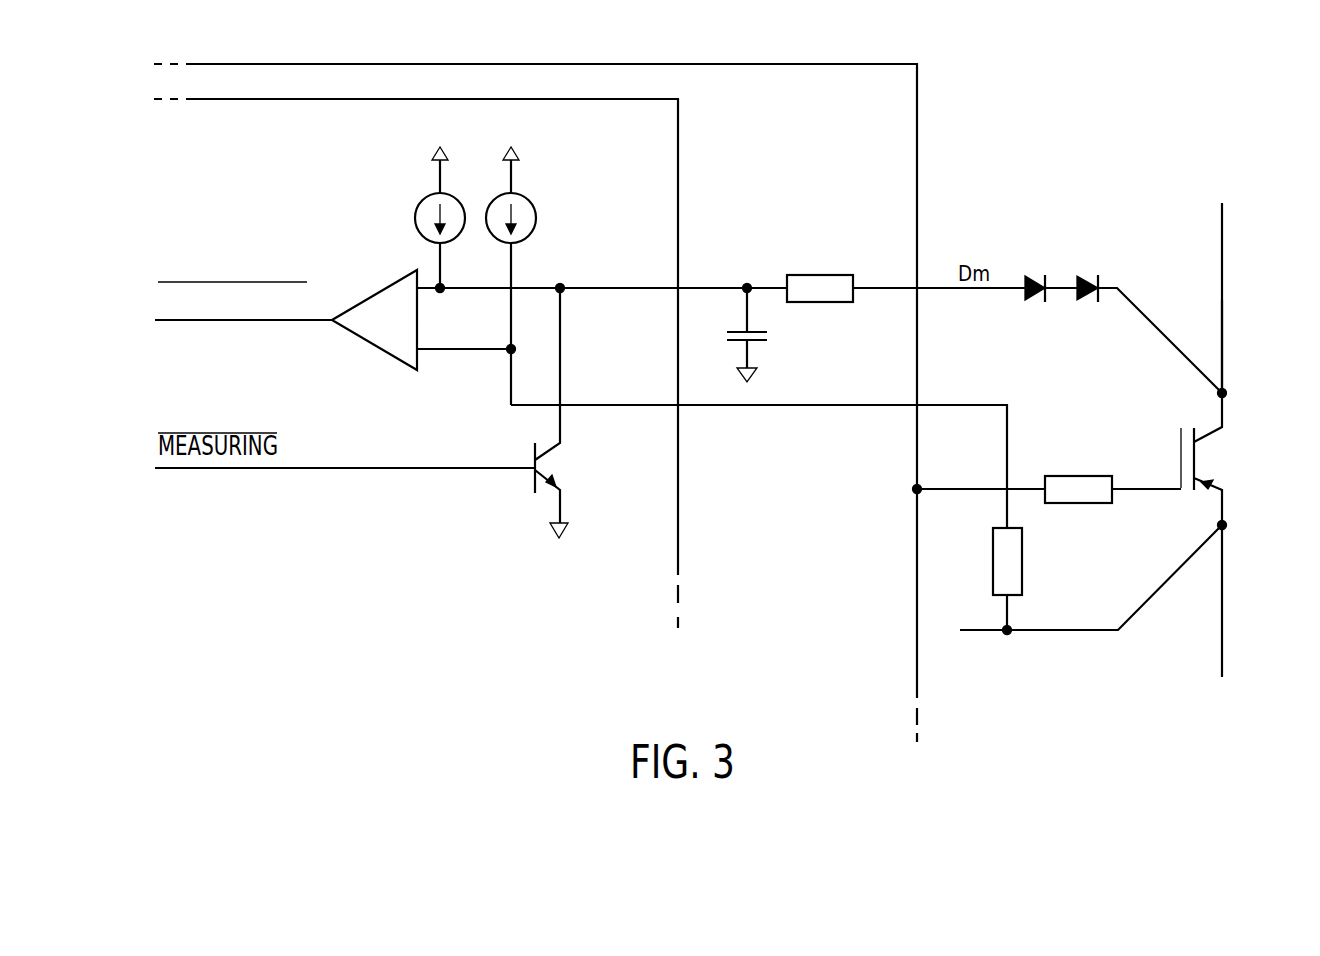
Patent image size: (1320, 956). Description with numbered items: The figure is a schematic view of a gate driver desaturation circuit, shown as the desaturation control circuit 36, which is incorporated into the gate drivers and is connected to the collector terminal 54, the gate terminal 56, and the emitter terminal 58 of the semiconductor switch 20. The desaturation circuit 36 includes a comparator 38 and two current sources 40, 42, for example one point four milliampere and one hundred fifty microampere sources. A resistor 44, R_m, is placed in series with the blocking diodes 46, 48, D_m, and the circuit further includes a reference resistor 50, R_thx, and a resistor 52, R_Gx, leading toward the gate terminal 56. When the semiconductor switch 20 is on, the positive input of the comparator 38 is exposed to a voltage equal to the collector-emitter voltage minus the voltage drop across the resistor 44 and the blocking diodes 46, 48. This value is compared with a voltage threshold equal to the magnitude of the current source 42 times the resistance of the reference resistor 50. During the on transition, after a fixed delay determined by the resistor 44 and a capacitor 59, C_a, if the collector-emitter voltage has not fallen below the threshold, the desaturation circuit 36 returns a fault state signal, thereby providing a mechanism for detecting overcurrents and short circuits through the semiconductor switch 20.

The desaturation control circuit 36 is at (998, 80).
The comparator 38 is at (372, 347).
The current source 40 is at (418, 200).
The current source 42 is at (532, 200).
The resistor 44 is at (820, 275).
The blocking diode 46 is at (1035, 302).
The blocking diode 48 is at (1088, 302).
The reference resistor 50 is at (1022, 545).
The resistor 52 is at (1050, 476).
The collector terminal 54 is at (1222, 370).
The gate terminal 56 is at (1187, 492).
The emitter terminal 58 is at (1225, 507).
The capacitor 59 is at (757, 342).
The semiconductor switch 20 is at (1218, 442).